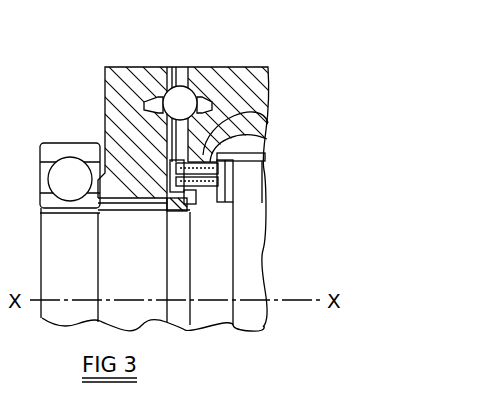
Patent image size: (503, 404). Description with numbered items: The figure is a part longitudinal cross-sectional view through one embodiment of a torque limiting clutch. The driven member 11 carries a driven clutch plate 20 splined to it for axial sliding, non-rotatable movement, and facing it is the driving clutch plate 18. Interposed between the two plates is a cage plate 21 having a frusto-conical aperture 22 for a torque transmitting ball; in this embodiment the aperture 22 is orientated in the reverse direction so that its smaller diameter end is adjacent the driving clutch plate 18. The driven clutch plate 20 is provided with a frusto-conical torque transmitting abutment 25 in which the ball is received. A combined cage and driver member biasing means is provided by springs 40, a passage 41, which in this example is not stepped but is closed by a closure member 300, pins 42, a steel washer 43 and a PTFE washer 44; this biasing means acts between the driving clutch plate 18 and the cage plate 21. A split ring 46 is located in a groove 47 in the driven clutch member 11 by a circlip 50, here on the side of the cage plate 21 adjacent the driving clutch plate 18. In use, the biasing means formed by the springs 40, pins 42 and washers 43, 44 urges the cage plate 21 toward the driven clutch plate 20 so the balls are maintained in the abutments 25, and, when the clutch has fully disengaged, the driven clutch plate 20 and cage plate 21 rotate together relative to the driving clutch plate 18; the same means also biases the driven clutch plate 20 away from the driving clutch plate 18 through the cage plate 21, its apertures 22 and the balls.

The driven member 11 is at (70, 203).
The driving clutch plate 18 is at (268, 73).
The driven clutch plate 20 is at (112, 68).
The cage plate 21 is at (191, 67).
The aperture 22 is at (170, 90).
The torque transmitting abutment 25 is at (157, 121).
The spring 40 is at (258, 146).
The passage 41 is at (200, 192).
The pin 42 is at (250, 123).
The steel washer 43 is at (197, 200).
The PTFE washer 44 is at (172, 180).
The split ring 46 is at (182, 207).
The groove 47 is at (160, 212).
The circlip 50 is at (190, 207).
The closure member 300 is at (222, 203).